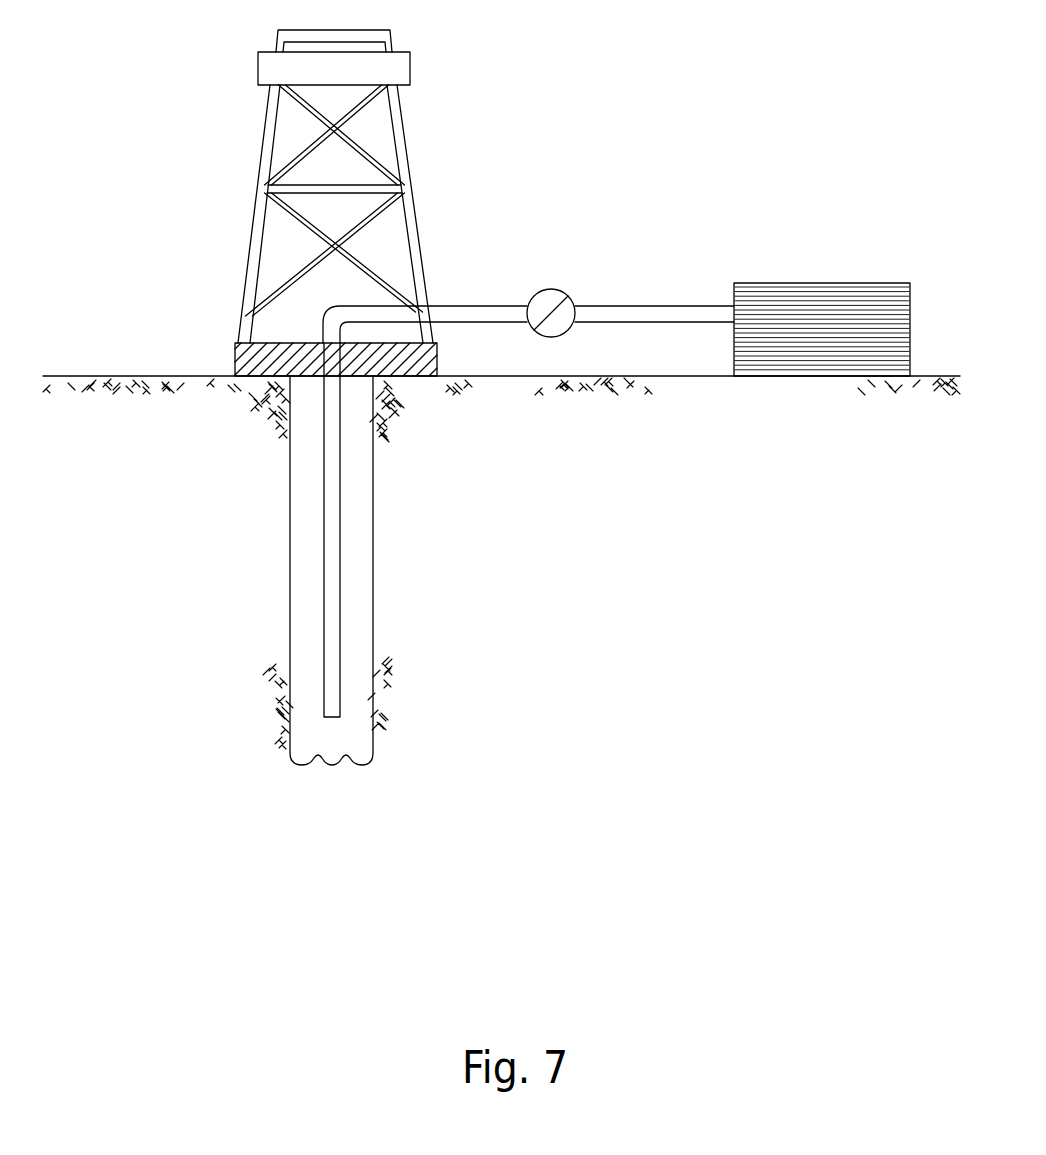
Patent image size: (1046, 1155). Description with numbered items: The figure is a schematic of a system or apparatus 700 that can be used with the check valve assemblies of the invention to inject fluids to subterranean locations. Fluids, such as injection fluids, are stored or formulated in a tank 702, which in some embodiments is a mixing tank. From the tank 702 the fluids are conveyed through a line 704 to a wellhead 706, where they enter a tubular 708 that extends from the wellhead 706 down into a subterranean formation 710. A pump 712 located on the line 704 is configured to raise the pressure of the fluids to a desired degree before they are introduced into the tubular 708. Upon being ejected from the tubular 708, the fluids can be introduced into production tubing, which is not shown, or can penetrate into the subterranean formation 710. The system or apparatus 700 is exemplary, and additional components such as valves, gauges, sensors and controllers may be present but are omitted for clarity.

The system or apparatus 700 is at (177, 92).
The tank 702 is at (822, 283).
The line 704 is at (470, 306).
The wellhead 706 is at (233, 362).
The tubular 708 is at (339, 490).
The subterranean formation 710 is at (138, 573).
The pump 712 is at (553, 290).